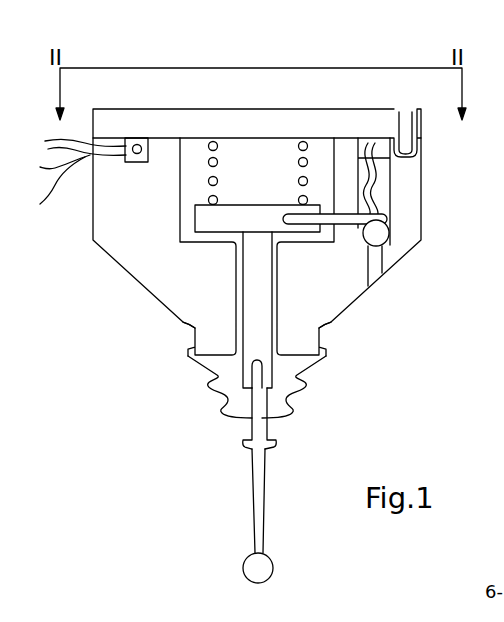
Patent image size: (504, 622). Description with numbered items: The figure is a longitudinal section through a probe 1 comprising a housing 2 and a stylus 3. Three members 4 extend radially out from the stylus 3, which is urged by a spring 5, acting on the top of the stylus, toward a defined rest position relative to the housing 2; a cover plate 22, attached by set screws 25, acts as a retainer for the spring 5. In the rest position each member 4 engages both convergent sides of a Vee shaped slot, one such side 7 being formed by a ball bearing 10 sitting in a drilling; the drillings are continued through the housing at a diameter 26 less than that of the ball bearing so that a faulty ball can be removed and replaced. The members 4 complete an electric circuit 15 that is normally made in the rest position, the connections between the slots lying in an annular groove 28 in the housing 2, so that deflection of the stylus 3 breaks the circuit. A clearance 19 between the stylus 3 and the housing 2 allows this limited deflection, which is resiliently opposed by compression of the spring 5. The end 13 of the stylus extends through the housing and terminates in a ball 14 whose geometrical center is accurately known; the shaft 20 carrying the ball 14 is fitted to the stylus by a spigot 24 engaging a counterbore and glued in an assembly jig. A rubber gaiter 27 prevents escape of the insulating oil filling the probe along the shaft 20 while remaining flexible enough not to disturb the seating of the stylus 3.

The probe 1 is at (143, 259).
The housing 2 is at (338, 315).
The stylus 3 is at (265, 472).
The members 4 is at (350, 228).
The spring 5 is at (218, 162).
The side of Vee shaped slot 7 is at (196, 219).
The ball bearing 10 is at (390, 233).
The end of the stylus 13 is at (263, 522).
The ball 14 is at (273, 566).
The electric circuit 15 is at (67, 178).
The clearance 19 is at (163, 301).
The shaft 20 is at (252, 507).
The cover plate 22 is at (250, 109).
The spigot 24 is at (252, 380).
The set screws 25 is at (407, 150).
The diameter 26 is at (383, 262).
The rubber gaiter 27 is at (300, 391).
The annular groove 28 is at (133, 163).